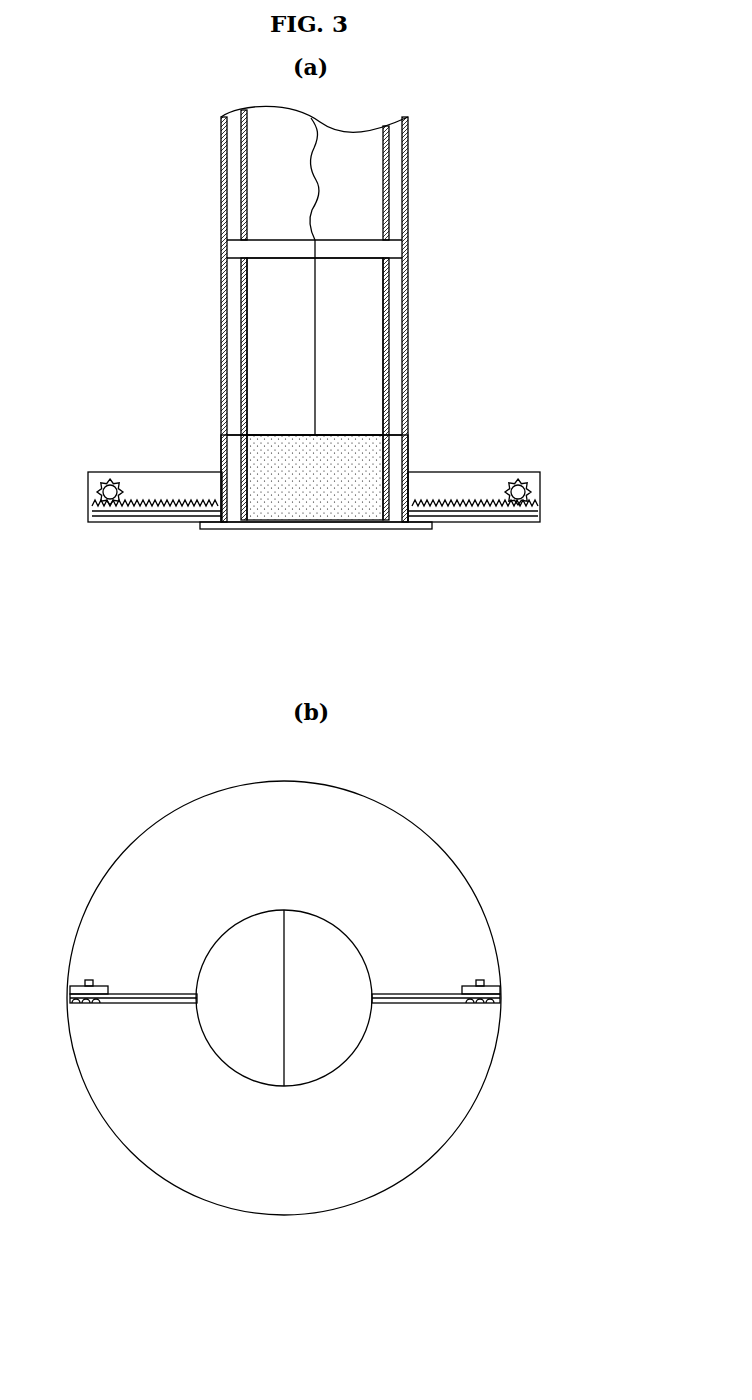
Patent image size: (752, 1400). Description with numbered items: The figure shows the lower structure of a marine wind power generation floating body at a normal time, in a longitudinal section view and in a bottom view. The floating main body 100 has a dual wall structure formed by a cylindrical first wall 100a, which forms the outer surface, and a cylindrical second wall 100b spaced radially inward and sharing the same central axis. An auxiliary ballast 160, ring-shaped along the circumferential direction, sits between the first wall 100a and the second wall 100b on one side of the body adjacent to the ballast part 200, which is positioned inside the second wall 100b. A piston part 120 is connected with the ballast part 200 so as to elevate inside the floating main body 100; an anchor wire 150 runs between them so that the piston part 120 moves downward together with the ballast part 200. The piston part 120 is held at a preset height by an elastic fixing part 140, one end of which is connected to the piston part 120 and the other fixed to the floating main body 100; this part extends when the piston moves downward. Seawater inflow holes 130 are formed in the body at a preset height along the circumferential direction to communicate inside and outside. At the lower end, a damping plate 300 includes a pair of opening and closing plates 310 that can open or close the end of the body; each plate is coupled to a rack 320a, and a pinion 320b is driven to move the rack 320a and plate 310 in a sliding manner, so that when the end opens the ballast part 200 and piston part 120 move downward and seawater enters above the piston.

The floating main body 100 is at (397, 314).
The first wall 100a is at (408, 148).
The second wall 100b is at (408, 190).
The piston part 120 is at (263, 252).
The seawater inflow hole 130 is at (408, 245).
The elastic fixing part 140 is at (306, 190).
The anchor wire 150 is at (317, 310).
The auxiliary ballast 160 is at (222, 457).
The ballast part 200 is at (283, 510).
The damping plate 300 is at (497, 464).
The opening and closing plate 310 is at (367, 529).
The rack 320a is at (445, 529).
The pinion 320b is at (517, 500).